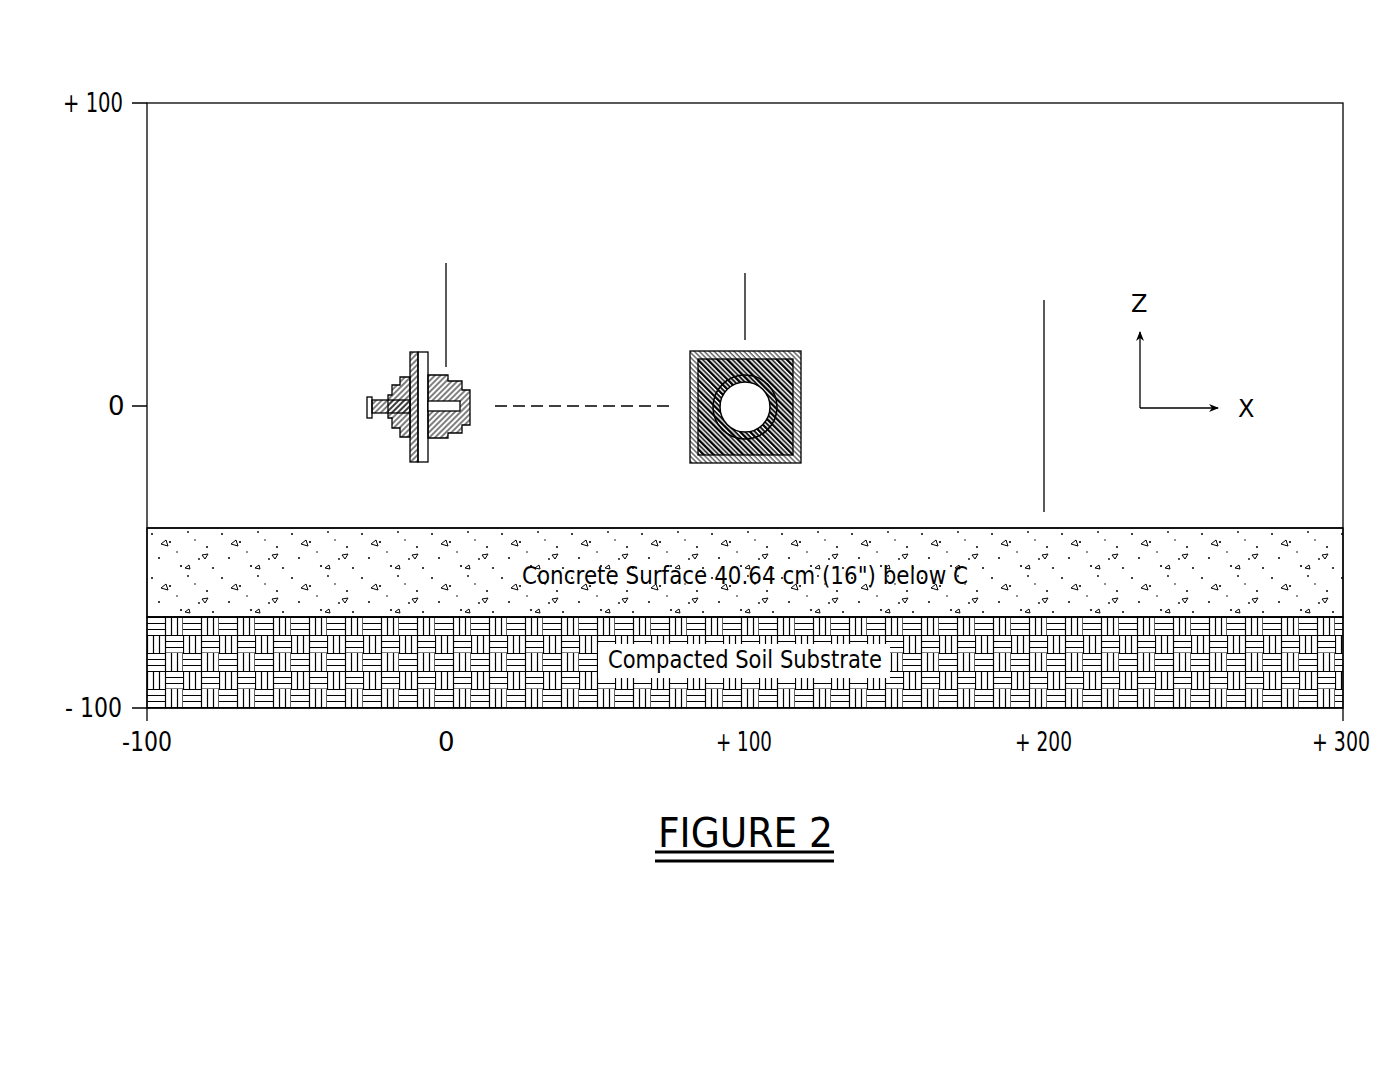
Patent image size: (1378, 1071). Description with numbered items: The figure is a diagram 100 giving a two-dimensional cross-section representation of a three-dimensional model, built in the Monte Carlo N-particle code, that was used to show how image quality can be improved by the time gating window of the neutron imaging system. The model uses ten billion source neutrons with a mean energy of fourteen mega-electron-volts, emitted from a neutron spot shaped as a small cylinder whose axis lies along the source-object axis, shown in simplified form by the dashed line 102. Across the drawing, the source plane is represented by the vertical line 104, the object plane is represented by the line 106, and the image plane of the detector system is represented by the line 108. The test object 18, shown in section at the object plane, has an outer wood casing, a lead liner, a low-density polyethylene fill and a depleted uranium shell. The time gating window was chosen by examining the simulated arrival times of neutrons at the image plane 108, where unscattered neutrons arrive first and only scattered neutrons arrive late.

The diagram 100 is at (1152, 84).
The dashed line 102 is at (583, 405).
The source plane 104 is at (446, 305).
The object plane 106 is at (745, 305).
The image plane 108 is at (1043, 360).
The test object 18 is at (812, 406).